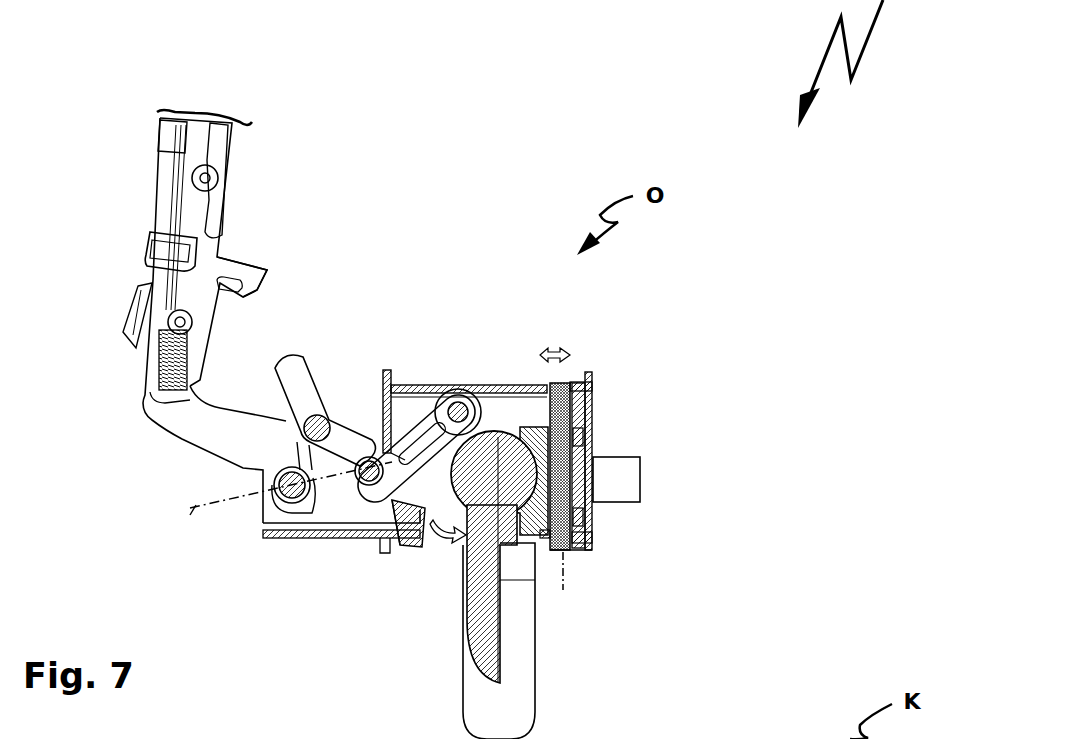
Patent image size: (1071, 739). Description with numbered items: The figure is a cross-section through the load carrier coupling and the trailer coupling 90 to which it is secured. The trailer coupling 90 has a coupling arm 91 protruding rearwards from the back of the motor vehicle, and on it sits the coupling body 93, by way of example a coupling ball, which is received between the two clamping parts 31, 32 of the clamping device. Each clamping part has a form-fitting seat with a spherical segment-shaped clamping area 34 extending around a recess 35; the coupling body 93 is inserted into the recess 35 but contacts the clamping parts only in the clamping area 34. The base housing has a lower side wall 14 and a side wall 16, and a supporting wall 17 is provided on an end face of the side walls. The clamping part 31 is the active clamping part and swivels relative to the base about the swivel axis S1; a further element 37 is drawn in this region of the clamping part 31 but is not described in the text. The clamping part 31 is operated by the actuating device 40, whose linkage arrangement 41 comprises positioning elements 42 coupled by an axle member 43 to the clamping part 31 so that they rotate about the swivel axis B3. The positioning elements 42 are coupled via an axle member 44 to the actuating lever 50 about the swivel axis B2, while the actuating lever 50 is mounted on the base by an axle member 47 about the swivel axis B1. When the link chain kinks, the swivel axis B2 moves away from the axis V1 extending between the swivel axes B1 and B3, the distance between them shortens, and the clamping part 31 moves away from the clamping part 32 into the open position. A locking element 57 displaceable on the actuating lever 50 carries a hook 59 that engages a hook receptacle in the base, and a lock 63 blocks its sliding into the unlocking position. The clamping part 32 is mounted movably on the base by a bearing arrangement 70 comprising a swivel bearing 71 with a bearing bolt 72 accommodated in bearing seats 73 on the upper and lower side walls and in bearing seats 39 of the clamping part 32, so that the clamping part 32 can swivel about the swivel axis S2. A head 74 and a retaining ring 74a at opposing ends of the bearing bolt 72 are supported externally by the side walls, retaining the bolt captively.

The lower side wall 14 is at (408, 387).
The side wall 16 is at (262, 535).
The supporting wall 17 is at (590, 397).
The clamping part 31 is at (400, 523).
The clamping part 32 is at (530, 425).
The clamping area 34 is at (397, 513).
The recess 35 is at (413, 482).
The lever 37 is at (460, 408).
The bearing seat 39 is at (580, 438).
The actuating device 40 is at (222, 470).
The linkage arrangement 41 is at (282, 460).
The positioning element 42 is at (345, 448).
The axle member 43 is at (344, 455).
The axle member 44 is at (300, 420).
The axle member 47 is at (290, 488).
The actuating lever 50 is at (245, 150).
The locking element 57 is at (217, 209).
The hook 59 is at (240, 270).
The lock 63 is at (157, 247).
The bearing arrangement 70 is at (600, 478).
The swivel bearing 71 is at (567, 550).
The bearing bolt 72 is at (565, 417).
The bearing seat 73 is at (547, 382).
The head 74 is at (572, 382).
The retaining ring 74a is at (582, 541).
The trailer coupling 90 is at (555, 660).
The coupling arm 91 is at (463, 672).
The coupling body 93 is at (490, 455).
The swivel axis B1 is at (290, 494).
The swivel axis B2 is at (322, 425).
The swivel axis B3 is at (371, 480).
The swivel axis S1 is at (458, 405).
The swivel axis S2 is at (563, 583).
The axis V1 is at (192, 515).